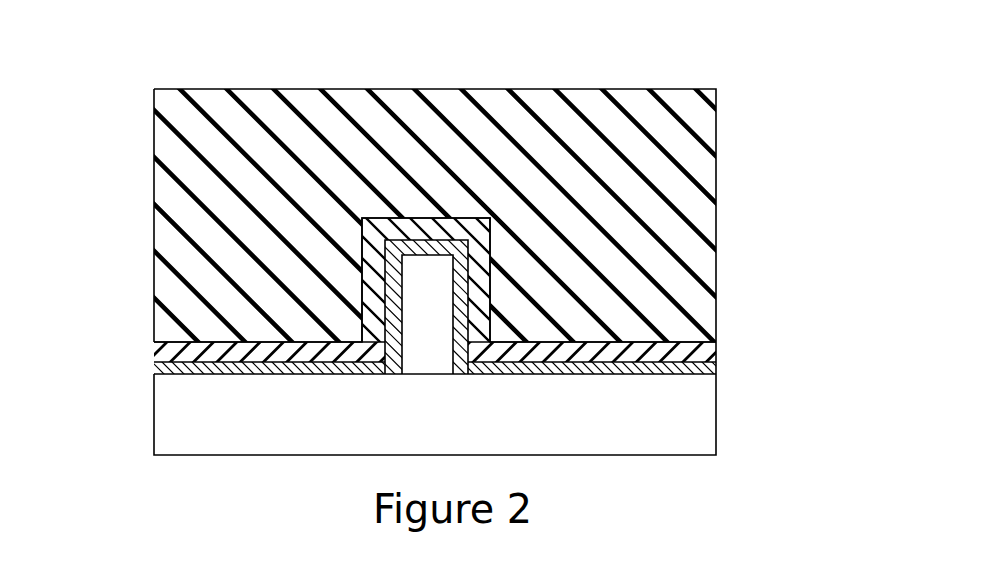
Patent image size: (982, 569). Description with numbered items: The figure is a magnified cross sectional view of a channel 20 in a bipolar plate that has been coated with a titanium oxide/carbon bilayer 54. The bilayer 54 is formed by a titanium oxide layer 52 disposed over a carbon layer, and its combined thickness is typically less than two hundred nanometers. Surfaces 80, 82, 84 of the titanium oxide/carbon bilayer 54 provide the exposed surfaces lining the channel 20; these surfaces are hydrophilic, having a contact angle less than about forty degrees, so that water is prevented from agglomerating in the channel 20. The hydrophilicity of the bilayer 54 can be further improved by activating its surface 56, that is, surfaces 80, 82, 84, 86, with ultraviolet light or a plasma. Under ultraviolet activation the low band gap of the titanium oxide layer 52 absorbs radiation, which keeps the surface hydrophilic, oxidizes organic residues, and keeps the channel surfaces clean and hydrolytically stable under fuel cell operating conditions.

The channel 20 is at (432, 360).
The titanium oxide layer 52 is at (460, 343).
The titanium oxide/carbon bilayer 54 is at (733, 362).
The surface 56 is at (396, 337).
The surface 80 is at (397, 290).
The surface 82 is at (425, 255).
The surface 84 is at (458, 300).
The surface 86 is at (216, 366).